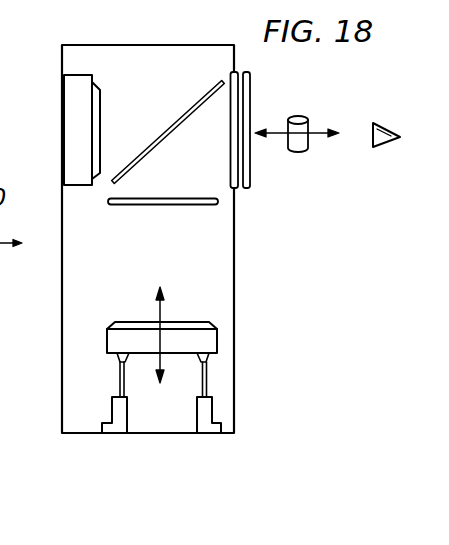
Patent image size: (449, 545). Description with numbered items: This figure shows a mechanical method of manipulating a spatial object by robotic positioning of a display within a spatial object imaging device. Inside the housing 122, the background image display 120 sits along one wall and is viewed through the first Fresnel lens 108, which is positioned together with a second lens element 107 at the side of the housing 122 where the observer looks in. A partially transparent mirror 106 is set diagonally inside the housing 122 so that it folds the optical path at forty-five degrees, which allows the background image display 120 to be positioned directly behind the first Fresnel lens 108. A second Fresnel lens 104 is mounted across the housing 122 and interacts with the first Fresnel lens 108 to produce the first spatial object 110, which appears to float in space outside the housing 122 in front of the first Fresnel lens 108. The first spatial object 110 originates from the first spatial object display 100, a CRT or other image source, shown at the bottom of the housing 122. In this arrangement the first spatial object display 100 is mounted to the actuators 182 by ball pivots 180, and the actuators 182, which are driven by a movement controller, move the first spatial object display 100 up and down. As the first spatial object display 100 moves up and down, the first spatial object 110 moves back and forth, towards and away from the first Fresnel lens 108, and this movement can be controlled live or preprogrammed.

The first spatial object display 100 is at (213, 342).
The second Fresnel lens 104 is at (168, 206).
The partially transparent mirror 106 is at (156, 130).
The window plate 107 is at (250, 82).
The first Fresnel lens 108 is at (232, 168).
The first spatial object 110 is at (297, 150).
The background image display 120 is at (80, 75).
The housing 122 is at (235, 258).
The ball pivots 180 is at (118, 356).
The actuators 182 is at (213, 412).